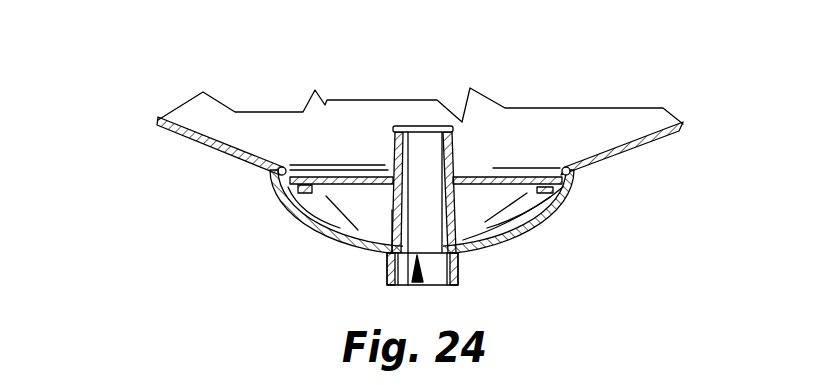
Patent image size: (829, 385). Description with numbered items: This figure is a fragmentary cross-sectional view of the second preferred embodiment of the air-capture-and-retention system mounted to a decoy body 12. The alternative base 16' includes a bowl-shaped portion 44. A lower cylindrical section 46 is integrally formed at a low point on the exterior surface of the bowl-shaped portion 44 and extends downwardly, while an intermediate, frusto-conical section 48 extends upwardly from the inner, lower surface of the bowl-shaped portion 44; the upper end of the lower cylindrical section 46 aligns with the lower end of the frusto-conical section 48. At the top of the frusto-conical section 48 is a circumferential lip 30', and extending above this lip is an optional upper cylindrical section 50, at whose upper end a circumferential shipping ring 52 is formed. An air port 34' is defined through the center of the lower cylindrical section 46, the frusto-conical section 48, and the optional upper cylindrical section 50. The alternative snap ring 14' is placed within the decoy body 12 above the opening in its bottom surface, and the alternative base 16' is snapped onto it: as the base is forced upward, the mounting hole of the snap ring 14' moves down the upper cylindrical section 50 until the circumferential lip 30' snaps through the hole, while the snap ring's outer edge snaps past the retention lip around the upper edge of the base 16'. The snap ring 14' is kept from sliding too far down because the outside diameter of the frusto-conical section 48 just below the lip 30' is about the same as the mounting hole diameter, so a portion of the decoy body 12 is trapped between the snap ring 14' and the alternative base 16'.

The decoy body 12 is at (200, 147).
The alternative snap ring 14' is at (515, 118).
The alternative base 16' is at (613, 198).
The circumferential lip 30' is at (442, 96).
The air port 34' is at (346, 280).
The bowl-shaped portion 44 is at (300, 217).
The lower cylindrical section 46 is at (458, 270).
The intermediate frusto-conical section 48 is at (388, 220).
The optional upper cylindrical section 50 is at (393, 165).
The circumferential shipping ring 52 is at (395, 127).